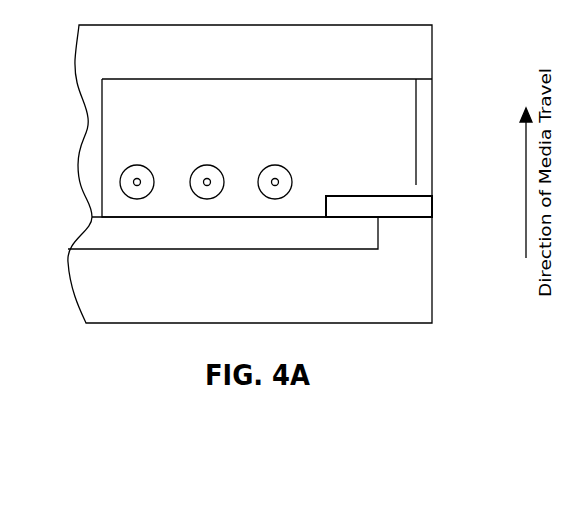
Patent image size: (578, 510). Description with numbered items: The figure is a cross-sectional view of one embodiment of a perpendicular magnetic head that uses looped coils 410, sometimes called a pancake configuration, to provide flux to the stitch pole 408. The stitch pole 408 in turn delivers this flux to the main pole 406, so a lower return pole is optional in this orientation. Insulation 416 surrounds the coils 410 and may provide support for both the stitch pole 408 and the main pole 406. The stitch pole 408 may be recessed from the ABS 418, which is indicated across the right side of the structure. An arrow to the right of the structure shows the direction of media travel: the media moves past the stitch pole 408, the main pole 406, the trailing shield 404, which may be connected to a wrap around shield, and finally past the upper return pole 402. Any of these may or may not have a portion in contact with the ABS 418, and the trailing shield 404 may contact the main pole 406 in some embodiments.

The upper return pole 402 is at (267, 60).
The trailing shield 404 is at (432, 113).
The main pole 406 is at (432, 202).
The stitch pole 408 is at (223, 233).
The looped coils 410 is at (133, 165).
The insulation 416 is at (238, 148).
The ABS 418 is at (432, 43).